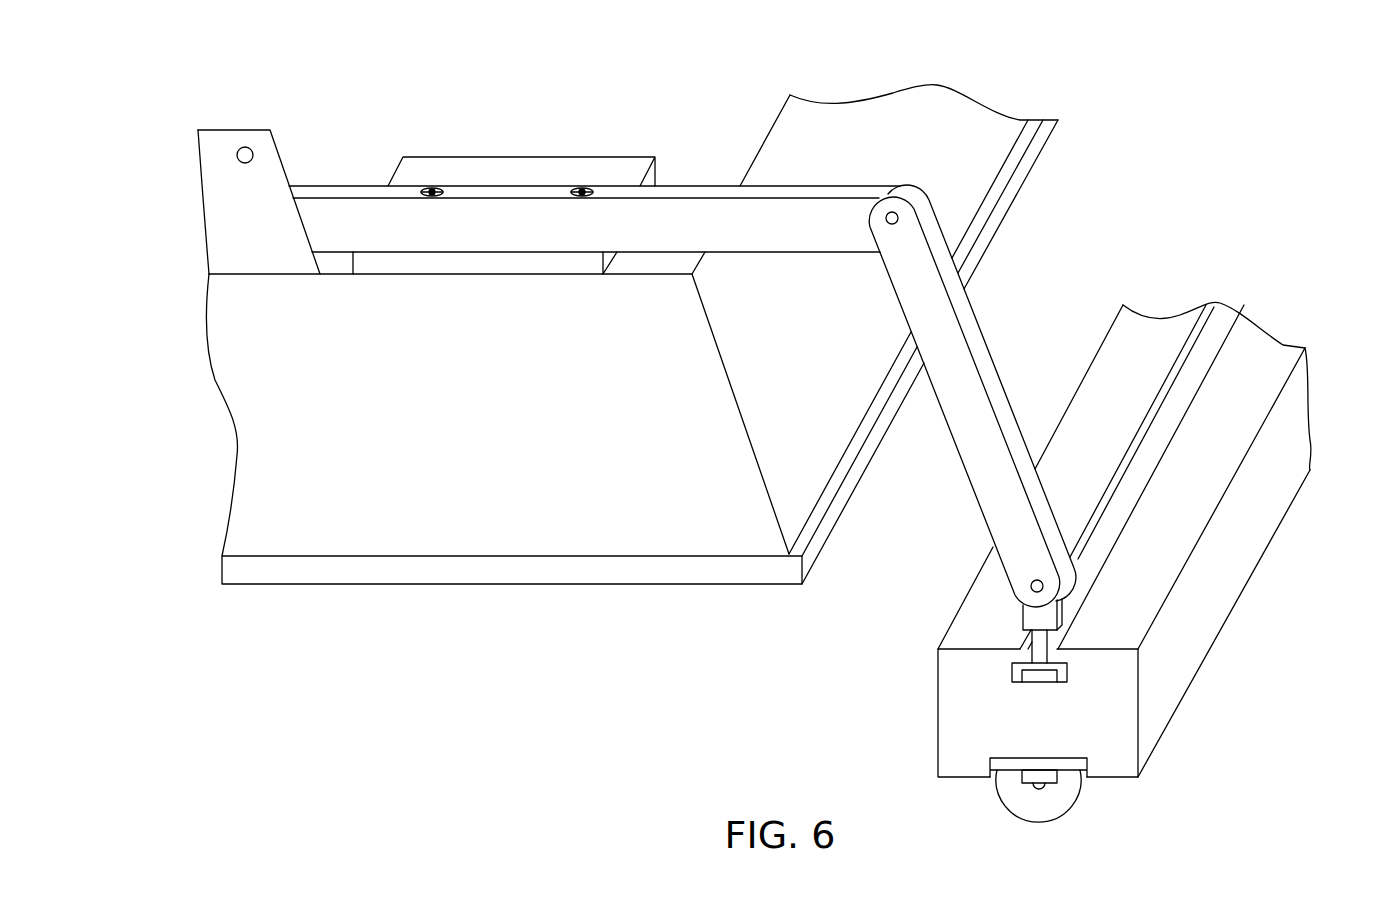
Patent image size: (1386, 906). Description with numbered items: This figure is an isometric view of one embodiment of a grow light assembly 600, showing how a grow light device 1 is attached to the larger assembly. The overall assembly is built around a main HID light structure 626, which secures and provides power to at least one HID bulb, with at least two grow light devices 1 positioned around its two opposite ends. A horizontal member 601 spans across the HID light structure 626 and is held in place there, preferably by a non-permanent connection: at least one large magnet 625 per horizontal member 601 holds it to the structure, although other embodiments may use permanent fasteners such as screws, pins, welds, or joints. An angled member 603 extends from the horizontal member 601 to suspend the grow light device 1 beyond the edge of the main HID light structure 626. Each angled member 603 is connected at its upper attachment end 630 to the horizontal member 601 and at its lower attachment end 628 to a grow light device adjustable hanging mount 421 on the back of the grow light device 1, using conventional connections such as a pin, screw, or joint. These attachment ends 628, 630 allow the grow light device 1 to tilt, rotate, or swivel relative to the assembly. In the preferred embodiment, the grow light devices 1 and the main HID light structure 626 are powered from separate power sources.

The grow light assembly 600 is at (1176, 92).
The main HID light structure 626 is at (473, 430).
The horizontal member 601 is at (688, 223).
The large magnet 625 is at (513, 175).
The angled member 603 is at (953, 358).
The upper attachment end 630 is at (892, 212).
The lower attachment end 628 is at (1031, 586).
The grow light device adjustable hanging mount 421 is at (1038, 620).
The grow light device 1 is at (950, 712).